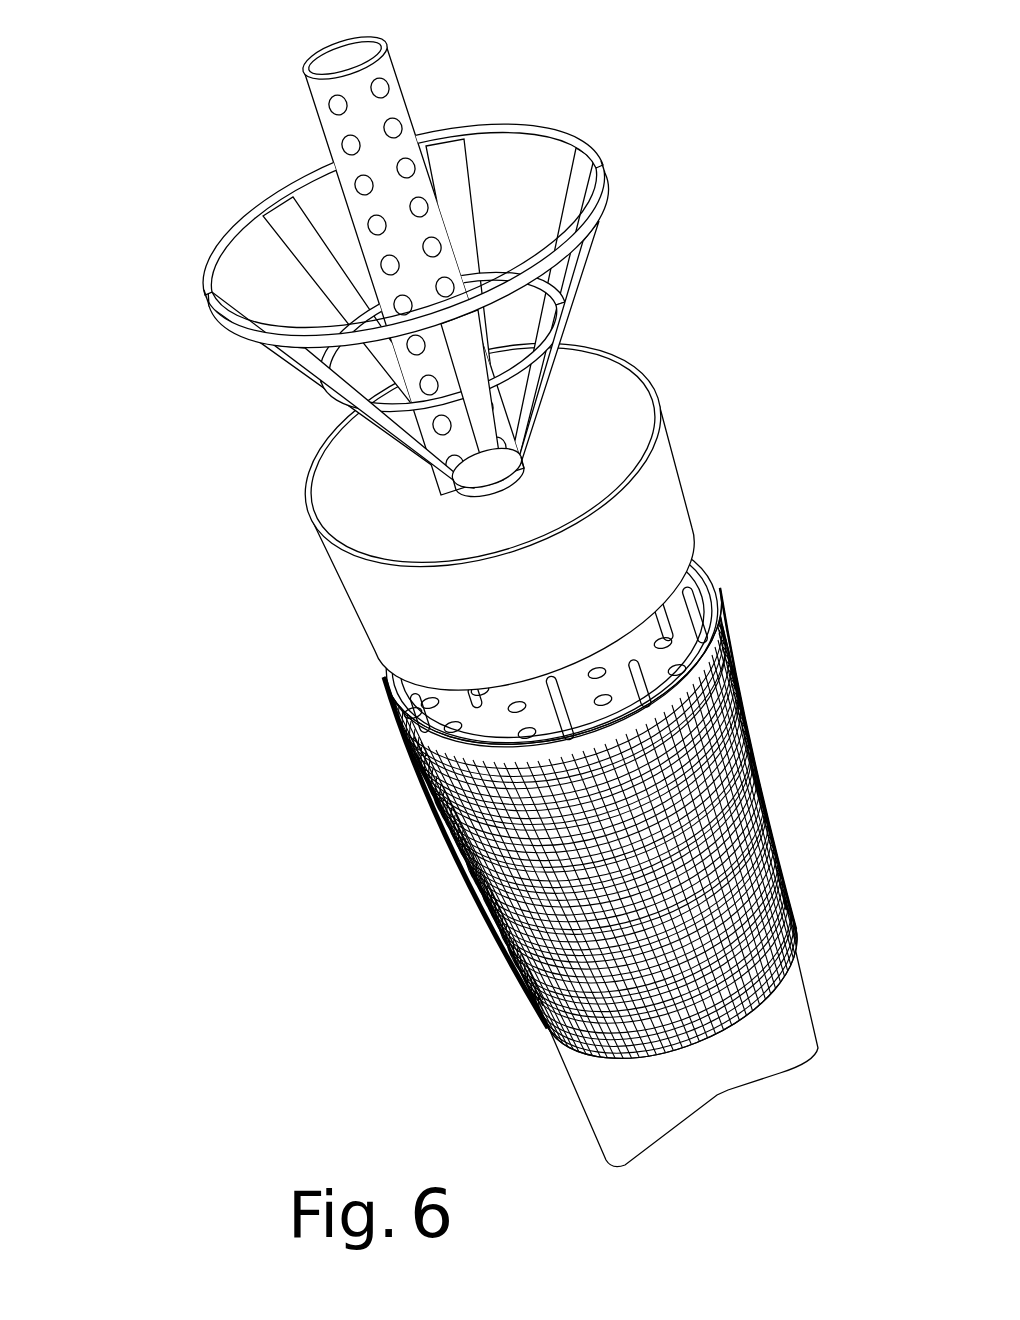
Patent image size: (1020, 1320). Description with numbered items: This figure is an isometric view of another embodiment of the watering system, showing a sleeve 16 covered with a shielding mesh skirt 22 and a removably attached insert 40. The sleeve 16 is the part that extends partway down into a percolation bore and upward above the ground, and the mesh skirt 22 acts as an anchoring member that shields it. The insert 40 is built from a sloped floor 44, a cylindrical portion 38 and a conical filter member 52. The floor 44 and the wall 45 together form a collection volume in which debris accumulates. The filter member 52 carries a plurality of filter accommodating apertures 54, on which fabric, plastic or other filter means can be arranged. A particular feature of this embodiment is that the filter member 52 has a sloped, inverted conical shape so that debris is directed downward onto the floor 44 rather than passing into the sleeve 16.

The sleeve 16 is at (568, 832).
The shielding mesh skirt 22 is at (766, 800).
The cylindrical portion 38 is at (320, 50).
The insert 40 is at (446, 496).
The sloped floor 44 is at (555, 492).
The wall 45 is at (386, 608).
The conical filter member 52 is at (347, 303).
The filter accommodating apertures 54 is at (263, 243).